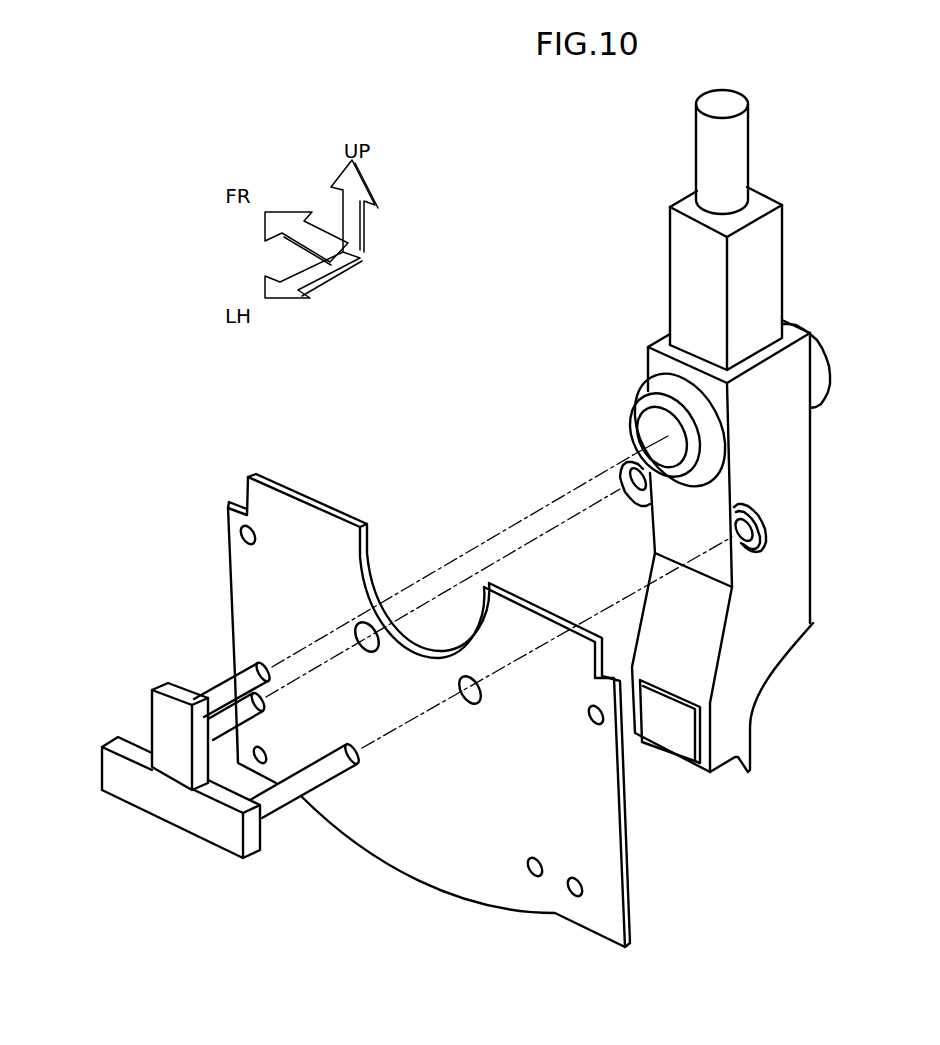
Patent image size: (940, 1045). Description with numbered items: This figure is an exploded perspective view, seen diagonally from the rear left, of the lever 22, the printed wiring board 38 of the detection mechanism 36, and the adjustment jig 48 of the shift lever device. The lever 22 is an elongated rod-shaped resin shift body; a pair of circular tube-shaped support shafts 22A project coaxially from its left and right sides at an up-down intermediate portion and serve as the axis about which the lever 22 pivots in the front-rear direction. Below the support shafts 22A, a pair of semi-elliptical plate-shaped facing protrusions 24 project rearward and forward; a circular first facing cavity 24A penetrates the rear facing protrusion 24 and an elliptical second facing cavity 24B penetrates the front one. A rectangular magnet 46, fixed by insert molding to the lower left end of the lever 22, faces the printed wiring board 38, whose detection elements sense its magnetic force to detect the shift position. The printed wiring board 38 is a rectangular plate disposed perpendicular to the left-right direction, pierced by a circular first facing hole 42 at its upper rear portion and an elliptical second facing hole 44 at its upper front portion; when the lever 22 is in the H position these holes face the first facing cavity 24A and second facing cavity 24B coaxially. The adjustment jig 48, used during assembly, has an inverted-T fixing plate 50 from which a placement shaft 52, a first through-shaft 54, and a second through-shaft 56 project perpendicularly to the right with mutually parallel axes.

The lever 22 is at (670, 198).
The support shafts 22A is at (633, 420).
The facing protrusions 24 is at (624, 470).
The first facing cavity 24A is at (755, 546).
The second facing cavity 24B is at (636, 495).
The detection mechanism 36 is at (476, 669).
The printed wiring board 38 is at (429, 669).
The first facing hole 42 is at (468, 705).
The second facing hole 44 is at (366, 652).
The magnet 46 is at (663, 742).
The adjustment jig 48 is at (250, 755).
The fixing plate 50 is at (160, 826).
The placement shaft 52 is at (218, 686).
The first through-shaft 54 is at (333, 780).
The second through-shaft 56 is at (252, 726).